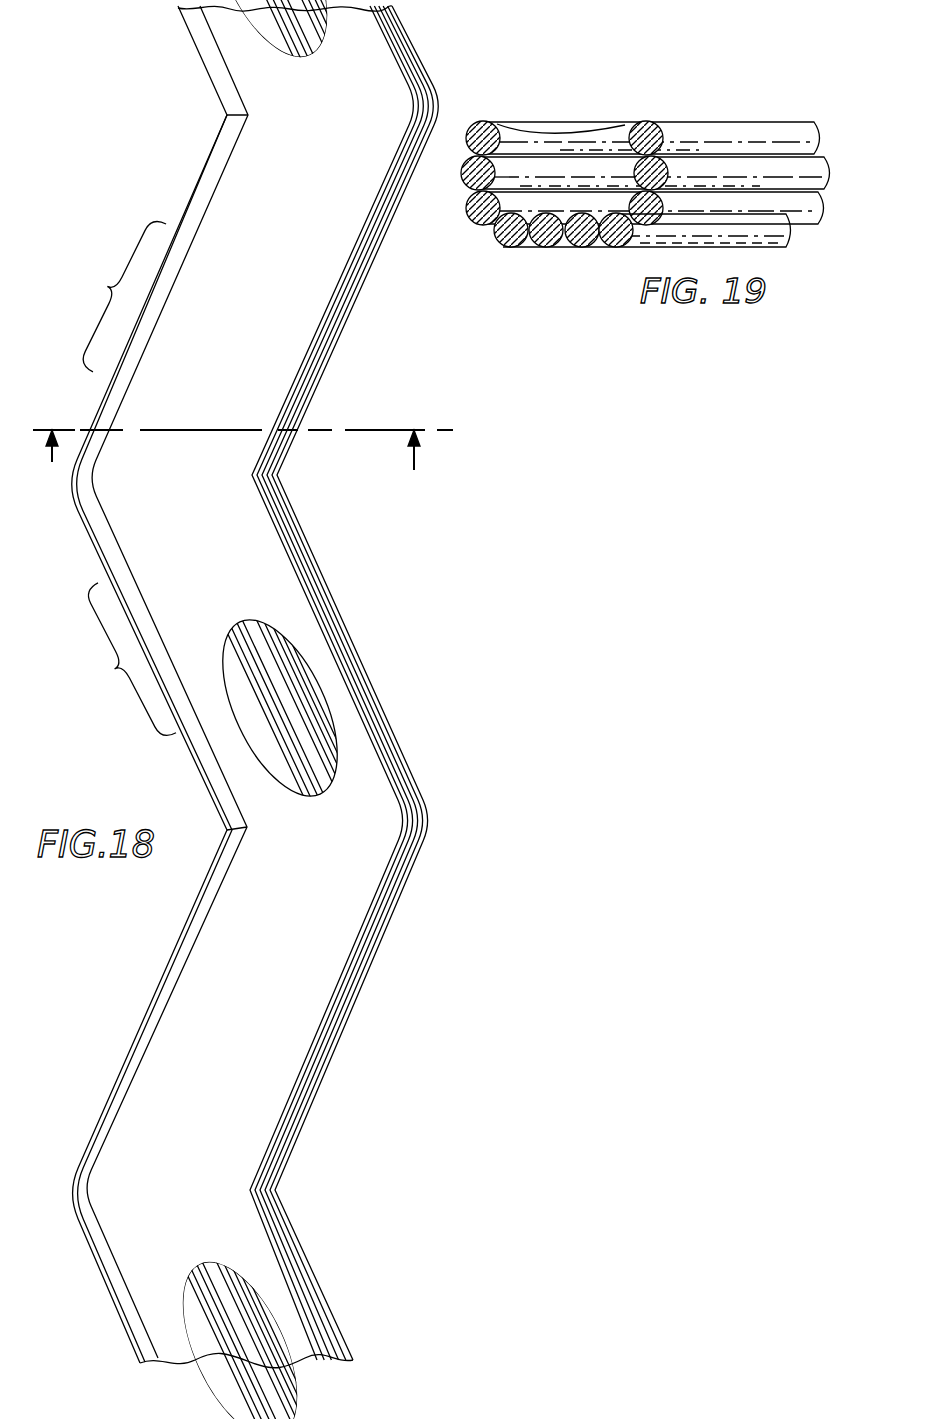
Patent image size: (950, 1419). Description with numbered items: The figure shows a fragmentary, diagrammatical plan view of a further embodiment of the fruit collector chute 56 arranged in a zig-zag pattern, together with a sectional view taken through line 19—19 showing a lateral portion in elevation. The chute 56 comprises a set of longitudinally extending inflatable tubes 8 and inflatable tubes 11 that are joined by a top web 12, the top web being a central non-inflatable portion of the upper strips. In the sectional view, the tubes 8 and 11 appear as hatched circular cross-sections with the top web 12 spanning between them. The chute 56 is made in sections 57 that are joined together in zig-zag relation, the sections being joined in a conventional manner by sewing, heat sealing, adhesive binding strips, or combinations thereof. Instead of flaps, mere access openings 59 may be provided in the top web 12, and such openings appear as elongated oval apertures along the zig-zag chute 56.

In FIG. 19, the inflatable tubes 8 is at (582, 238).
In FIG. 18, the inflatable tubes 11 is at (322, 353).
In FIG. 19, the inflatable tubes 11 is at (485, 123).
In FIG. 18, the top web 12 is at (303, 300).
In FIG. 19, the top web 12 is at (556, 128).
In FIG. 18, the chute 56 is at (255, 709).
In FIG. 19, the chute 56 is at (679, 182).
In FIG. 18, the sections 57 is at (122, 478).
In FIG. 18, the access openings 59 is at (238, 636).
In FIG. 18, the section line 19- 19 is at (239, 469).